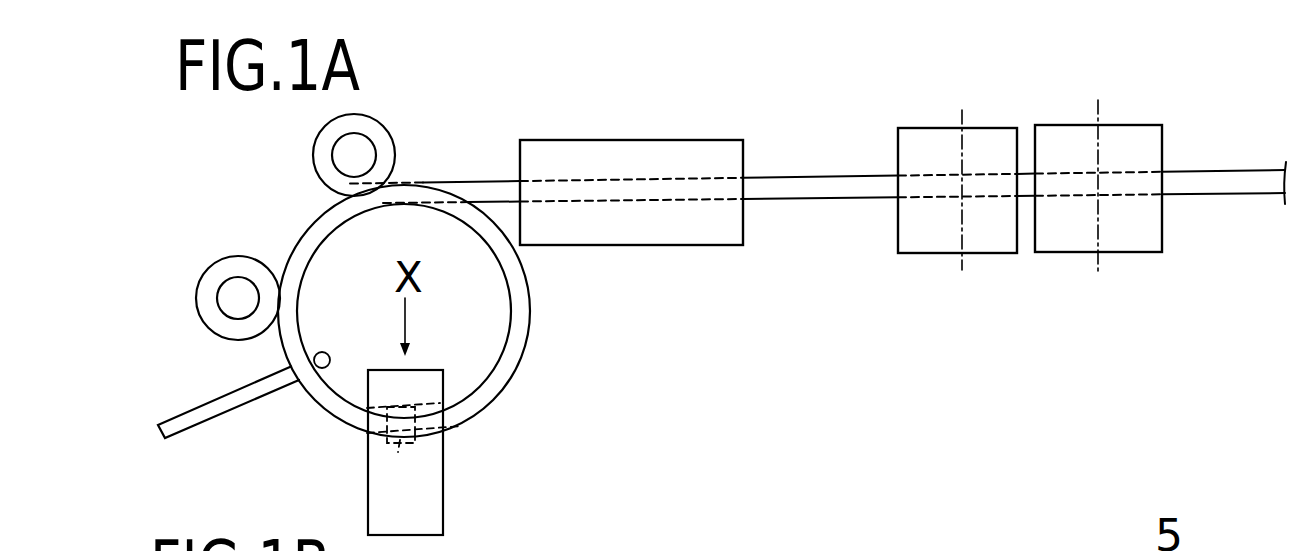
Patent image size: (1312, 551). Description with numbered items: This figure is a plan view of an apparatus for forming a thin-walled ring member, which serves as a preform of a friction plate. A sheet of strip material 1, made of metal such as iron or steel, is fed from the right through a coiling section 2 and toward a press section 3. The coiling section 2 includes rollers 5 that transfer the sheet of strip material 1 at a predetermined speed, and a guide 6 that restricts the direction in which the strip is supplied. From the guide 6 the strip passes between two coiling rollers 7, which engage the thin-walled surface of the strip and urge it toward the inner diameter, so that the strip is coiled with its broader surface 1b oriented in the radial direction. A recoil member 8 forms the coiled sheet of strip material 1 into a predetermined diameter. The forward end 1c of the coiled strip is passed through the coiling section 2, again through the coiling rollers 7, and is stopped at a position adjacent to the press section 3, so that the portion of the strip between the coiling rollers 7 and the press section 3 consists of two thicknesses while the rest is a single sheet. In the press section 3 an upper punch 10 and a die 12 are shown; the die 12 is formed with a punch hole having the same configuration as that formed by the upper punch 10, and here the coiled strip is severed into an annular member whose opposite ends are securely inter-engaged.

The sheet of strip material 1 is at (1232, 165).
The broader surface 1b is at (1197, 183).
The forward end 1c is at (460, 423).
The coiling section 2 is at (540, 356).
The press section 3 is at (455, 506).
The rollers 5 is at (993, 237).
The guide 6 is at (648, 155).
The coiling rollers 7 is at (383, 137).
The recoil member 8 is at (232, 398).
The upper punch 10 is at (398, 446).
The die 12 is at (383, 502).